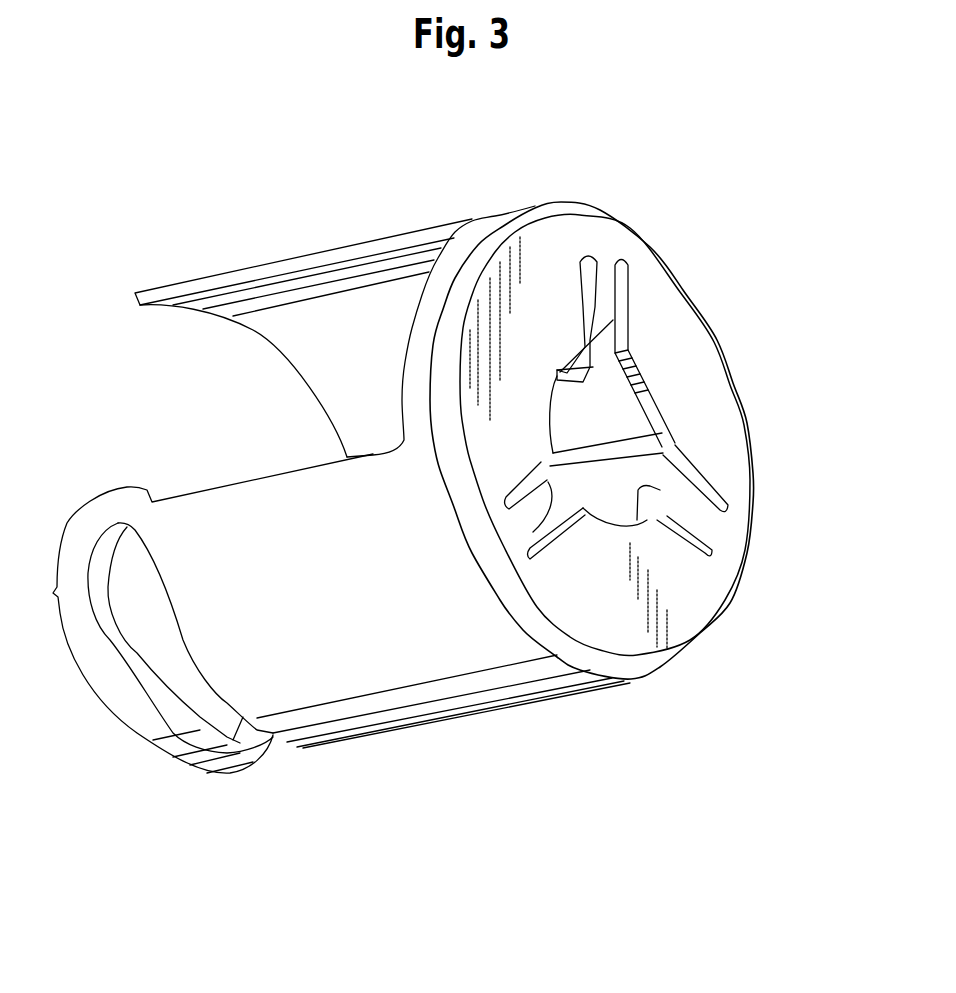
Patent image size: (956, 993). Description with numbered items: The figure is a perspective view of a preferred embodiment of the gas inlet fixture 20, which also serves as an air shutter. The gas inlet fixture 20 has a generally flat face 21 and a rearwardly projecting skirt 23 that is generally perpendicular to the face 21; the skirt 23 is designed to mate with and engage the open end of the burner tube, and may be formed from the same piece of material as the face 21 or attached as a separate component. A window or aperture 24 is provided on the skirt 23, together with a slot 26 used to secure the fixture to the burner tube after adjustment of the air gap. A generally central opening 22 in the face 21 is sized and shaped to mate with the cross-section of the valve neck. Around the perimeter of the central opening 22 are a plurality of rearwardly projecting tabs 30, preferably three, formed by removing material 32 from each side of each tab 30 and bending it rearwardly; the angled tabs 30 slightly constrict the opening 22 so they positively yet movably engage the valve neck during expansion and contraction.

The gas inlet fixture 20 is at (584, 200).
The face 21 is at (707, 593).
The central opening 22 is at (660, 410).
The skirt 23 is at (458, 680).
The window 24 is at (283, 268).
The slot 26 is at (268, 756).
The tabs 30 is at (668, 493).
The removed material 32 is at (584, 368).